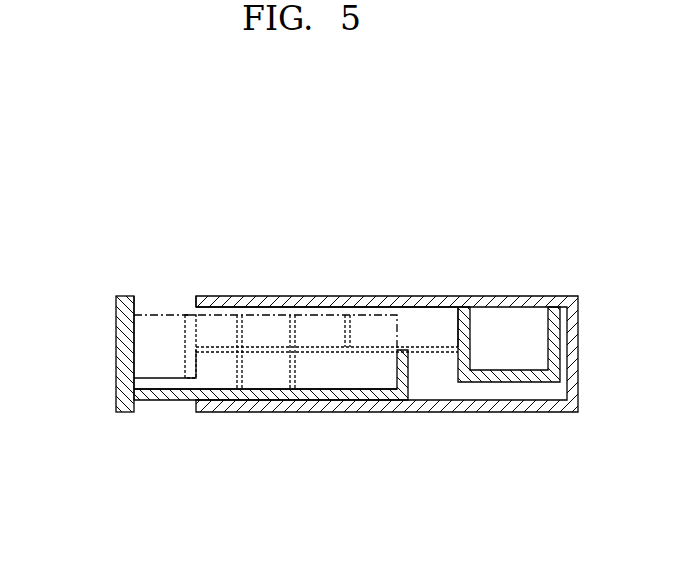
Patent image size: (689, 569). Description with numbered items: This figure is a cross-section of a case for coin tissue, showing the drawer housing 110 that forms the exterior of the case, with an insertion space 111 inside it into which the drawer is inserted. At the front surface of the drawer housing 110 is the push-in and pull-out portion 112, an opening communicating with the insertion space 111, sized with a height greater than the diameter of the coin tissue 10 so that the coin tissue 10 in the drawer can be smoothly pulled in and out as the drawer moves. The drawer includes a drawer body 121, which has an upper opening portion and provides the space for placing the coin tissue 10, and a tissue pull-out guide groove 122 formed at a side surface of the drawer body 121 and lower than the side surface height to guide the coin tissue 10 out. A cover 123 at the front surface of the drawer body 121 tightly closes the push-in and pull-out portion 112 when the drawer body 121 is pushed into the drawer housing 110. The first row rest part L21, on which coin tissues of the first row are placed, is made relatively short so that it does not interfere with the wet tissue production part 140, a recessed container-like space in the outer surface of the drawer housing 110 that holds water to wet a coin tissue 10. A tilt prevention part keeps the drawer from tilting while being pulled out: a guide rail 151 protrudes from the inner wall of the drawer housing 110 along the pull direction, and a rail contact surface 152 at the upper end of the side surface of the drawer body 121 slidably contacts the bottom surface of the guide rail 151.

The coin tissue 10 is at (153, 296).
The drawer housing 110 is at (318, 296).
The insertion space 111 is at (407, 323).
The push-in and pull-out portion 112 is at (165, 296).
The wet tissue production part 140 is at (503, 345).
The cover 123 is at (117, 316).
The tissue pull-out guide groove 122 is at (163, 377).
The drawer body 121 is at (160, 402).
The first row rest part L21 is at (312, 389).
The guide rail 151 is at (212, 348).
The rail contact surface 152 is at (252, 352).